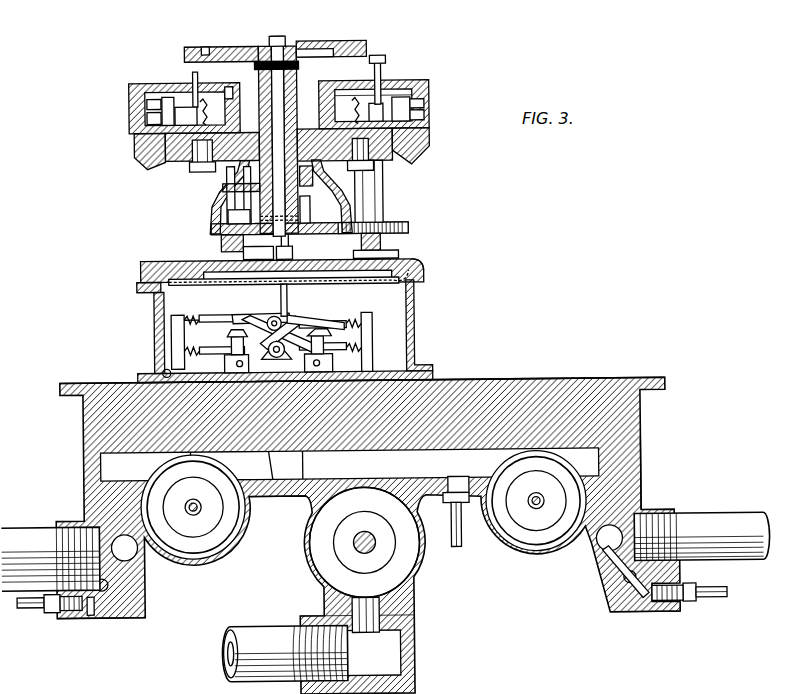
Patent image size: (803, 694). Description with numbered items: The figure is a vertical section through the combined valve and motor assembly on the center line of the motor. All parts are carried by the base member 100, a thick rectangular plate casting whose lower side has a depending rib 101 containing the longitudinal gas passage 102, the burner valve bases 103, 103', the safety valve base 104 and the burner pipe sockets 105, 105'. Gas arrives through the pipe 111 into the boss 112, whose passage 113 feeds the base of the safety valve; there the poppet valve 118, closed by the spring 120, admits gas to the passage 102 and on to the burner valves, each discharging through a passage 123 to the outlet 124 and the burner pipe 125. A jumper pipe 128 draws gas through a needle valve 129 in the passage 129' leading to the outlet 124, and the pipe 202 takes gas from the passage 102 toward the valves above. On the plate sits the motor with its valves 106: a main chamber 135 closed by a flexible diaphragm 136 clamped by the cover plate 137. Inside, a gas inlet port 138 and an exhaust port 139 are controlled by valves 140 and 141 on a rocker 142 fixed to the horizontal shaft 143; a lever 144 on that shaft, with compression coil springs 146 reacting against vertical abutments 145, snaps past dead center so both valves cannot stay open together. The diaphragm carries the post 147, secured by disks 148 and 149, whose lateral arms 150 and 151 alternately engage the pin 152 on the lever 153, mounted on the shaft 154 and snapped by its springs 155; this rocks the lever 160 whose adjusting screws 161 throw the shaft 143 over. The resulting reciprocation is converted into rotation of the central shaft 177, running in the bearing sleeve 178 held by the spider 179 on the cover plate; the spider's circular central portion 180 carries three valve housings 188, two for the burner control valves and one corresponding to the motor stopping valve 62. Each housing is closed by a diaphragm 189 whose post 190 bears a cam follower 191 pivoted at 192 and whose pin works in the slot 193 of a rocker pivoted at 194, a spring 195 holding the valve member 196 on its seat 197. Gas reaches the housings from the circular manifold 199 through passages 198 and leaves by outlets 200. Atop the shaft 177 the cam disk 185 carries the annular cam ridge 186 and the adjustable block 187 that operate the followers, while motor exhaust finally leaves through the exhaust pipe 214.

The motor stopping valve 62 is at (268, 360).
The base member 100 is at (666, 380).
The depending rib portion 101 is at (640, 418).
The longitudinal gas passage 102 is at (312, 498).
The burner valve base 103 is at (198, 519).
The burner valve base 103' is at (537, 527).
The safety valve base 104 is at (420, 560).
The burner pipe socket 105 is at (119, 618).
The burner pipe socket 105' is at (631, 627).
The motor and associated valves 106 is at (220, 228).
The gas supply pipe 111 is at (262, 632).
The boss 112 is at (405, 650).
The passage 113 is at (380, 605).
The poppet valve 118 is at (342, 530).
The spring 120 is at (355, 548).
The passage 123 is at (642, 490).
The outlet 124 is at (620, 538).
The burner pipe 125 is at (745, 518).
The jumper pipe 128 is at (712, 601).
The needle valve 129 is at (363, 616).
The passage 129' is at (364, 600).
The main chamber 135 is at (416, 318).
The flexible diaphragm 136 is at (415, 264).
The cover plate 137 is at (428, 276).
The gas inlet port 138 is at (348, 480).
The gas exhaust port 139 is at (190, 455).
The inlet valve 140 is at (322, 324).
The exhaust valve 141 is at (236, 336).
The rocker 142 is at (300, 492).
The horizontal shaft 143 is at (270, 492).
The lever 144 is at (418, 372).
The vertical abutments 145 is at (374, 340).
The compression coil springs 146 is at (352, 348).
The diaphragm post 147 is at (292, 268).
The large disk 148 is at (200, 279).
The disk 149 is at (289, 308).
The lateral arm 150 is at (302, 320).
The lateral arm 151 is at (340, 326).
The pin 152 is at (275, 315).
The lever 153 is at (205, 314).
The shaft 154 is at (268, 316).
The springs 155 is at (375, 313).
The lever 160 is at (236, 313).
The adjusting screws 161 is at (240, 318).
The central shaft 177 is at (292, 206).
The bearing supporting sleeve 178 is at (260, 64).
The spider 179 is at (382, 184).
The circular central portion 180 is at (222, 190).
The cam disk 185 is at (222, 44).
The annular cam ridge 186 is at (345, 42).
The block 187 is at (192, 50).
The valve housings 188 is at (132, 96).
The diaphragm 189 is at (150, 92).
The diaphragm post 190 is at (184, 105).
The cam follower 191 is at (382, 62).
The pivot 192 is at (378, 56).
The slot 193 is at (230, 88).
The pivot 194 is at (190, 104).
The spring 195 is at (214, 110).
The valve member 196 is at (149, 103).
The seat 197 is at (149, 118).
The passages 198 is at (175, 160).
The circular manifold 199 is at (203, 170).
The outlet 200 is at (140, 150).
The pipe 202 is at (462, 547).
The exhaust pipe 214 is at (160, 370).